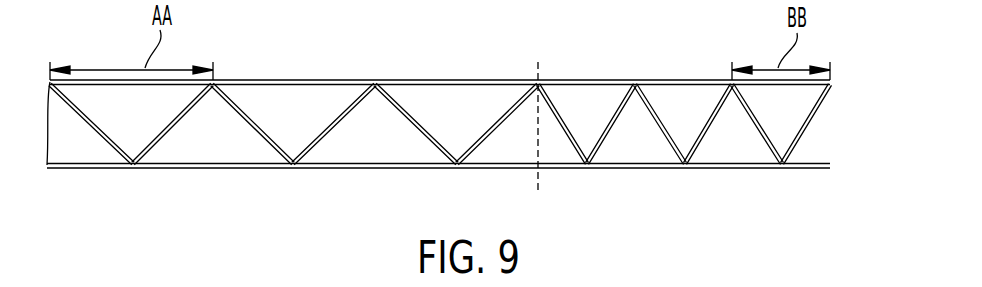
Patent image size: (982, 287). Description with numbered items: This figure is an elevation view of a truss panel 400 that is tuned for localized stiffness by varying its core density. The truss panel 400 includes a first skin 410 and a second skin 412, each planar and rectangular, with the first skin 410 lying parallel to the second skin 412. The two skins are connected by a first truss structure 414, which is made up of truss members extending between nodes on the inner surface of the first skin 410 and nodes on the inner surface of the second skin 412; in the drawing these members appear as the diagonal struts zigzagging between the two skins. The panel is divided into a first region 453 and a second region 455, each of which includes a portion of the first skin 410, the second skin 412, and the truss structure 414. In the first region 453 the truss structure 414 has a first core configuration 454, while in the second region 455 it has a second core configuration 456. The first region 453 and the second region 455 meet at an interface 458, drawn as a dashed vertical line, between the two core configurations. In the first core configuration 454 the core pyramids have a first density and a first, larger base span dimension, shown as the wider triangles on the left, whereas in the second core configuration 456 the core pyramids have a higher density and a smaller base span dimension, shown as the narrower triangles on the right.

The truss panel 400 is at (74, 39).
The first skin 410 is at (832, 166).
The second skin 412 is at (832, 82).
The first truss structure 414 is at (829, 126).
The first region 453 is at (198, 195).
The first core configuration 454 is at (246, 155).
The second region 455 is at (728, 188).
The second core configuration 456 is at (656, 162).
The interface 458 is at (541, 72).